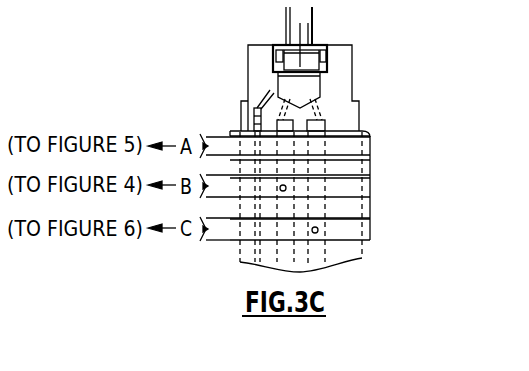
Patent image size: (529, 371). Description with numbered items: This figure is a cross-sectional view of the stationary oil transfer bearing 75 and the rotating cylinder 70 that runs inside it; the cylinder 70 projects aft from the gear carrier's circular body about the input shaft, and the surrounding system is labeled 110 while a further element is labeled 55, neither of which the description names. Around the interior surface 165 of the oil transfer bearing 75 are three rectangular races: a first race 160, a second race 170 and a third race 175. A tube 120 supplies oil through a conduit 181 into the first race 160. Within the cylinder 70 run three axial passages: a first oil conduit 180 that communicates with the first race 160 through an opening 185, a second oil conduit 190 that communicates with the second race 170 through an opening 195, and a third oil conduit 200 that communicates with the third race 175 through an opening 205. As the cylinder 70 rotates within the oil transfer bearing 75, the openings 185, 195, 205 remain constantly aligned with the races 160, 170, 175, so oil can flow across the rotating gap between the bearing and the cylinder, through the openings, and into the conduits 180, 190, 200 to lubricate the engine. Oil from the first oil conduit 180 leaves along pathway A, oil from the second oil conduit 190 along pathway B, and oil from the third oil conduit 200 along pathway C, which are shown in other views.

The beverage dispensing system 110 is at (0, 32).
The controller 55 is at (10, 261).
The tube 120 is at (313, 24).
The oil transfer bearing 75 is at (342, 73).
The conduit 181 is at (273, 93).
The third race 175 is at (331, 113).
The second race 170 is at (278, 88).
The first race 160 is at (253, 109).
The opening 185 is at (254, 124).
The interior surface 165 is at (344, 127).
The cylinder 70 is at (371, 133).
The first oil conduit 180 is at (352, 149).
The second oil conduit 190 is at (352, 190).
The third oil conduit 200 is at (352, 230).
The opening 195 is at (280, 188).
The opening 205 is at (318, 232).